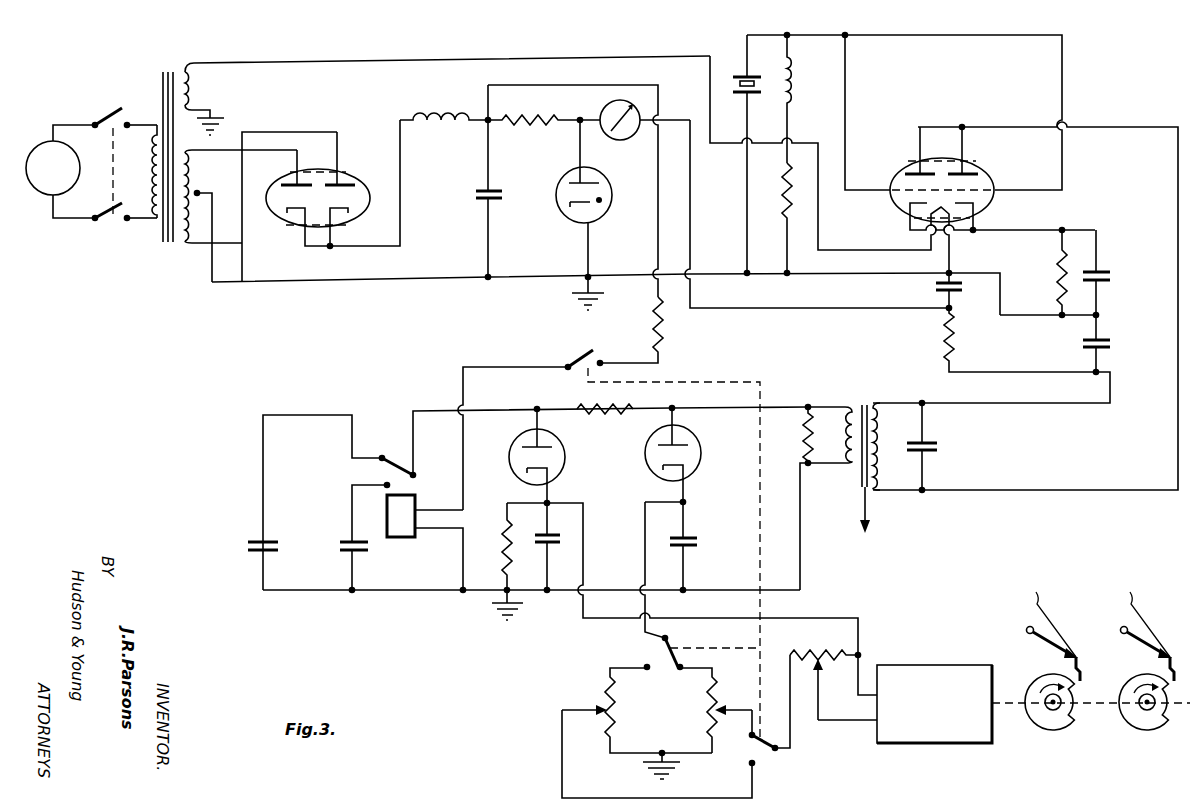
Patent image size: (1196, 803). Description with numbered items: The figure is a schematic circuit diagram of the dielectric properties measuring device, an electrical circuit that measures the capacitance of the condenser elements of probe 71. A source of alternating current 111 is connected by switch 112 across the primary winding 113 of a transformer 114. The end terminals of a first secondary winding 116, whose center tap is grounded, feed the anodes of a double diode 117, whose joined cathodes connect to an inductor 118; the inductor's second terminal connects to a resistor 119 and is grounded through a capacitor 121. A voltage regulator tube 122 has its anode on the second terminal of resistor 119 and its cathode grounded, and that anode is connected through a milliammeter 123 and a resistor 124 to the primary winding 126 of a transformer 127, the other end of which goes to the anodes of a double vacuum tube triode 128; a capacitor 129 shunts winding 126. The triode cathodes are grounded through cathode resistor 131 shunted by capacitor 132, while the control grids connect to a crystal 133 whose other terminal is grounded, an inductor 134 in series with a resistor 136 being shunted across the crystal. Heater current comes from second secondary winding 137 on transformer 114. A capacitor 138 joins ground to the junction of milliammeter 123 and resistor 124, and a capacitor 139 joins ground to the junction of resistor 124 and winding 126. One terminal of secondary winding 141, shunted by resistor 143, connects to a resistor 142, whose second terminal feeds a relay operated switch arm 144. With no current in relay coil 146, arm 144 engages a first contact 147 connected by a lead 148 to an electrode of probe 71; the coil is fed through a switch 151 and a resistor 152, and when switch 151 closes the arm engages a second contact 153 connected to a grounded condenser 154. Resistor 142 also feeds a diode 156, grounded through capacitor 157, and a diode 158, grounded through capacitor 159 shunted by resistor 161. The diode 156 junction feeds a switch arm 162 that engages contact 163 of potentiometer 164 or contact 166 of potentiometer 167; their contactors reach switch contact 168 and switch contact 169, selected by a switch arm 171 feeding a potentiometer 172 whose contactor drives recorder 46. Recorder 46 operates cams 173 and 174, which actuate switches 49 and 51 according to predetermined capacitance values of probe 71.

The recorder 46 is at (926, 664).
The switch 49 is at (1057, 620).
The switch 51 is at (1152, 612).
The probe 71 is at (243, 562).
The source of alternating current 111 is at (45, 200).
The switch 112 is at (103, 112).
The primary winding 113 is at (136, 223).
The transformer 114 is at (166, 252).
The first secondary winding 116 is at (194, 168).
The double diode 117 is at (348, 176).
The inductor 118 is at (422, 130).
The resistor 119 is at (513, 130).
The capacitor 121 is at (480, 200).
The voltage regulator tube 122 is at (564, 222).
The milliammeter 123 is at (610, 141).
The resistor 124 is at (962, 340).
The primary winding 126 is at (888, 490).
The transformer 127 is at (867, 395).
The double vacuum tube triode 128 is at (996, 212).
The capacitor 129 is at (940, 454).
The cathode resistor 131 is at (1058, 272).
The capacitor 132 is at (1108, 284).
The crystal 133 is at (760, 100).
The inductor 134 is at (796, 92).
The resistor 136 is at (782, 212).
The second secondary winding 137 is at (199, 85).
The capacitor 138 is at (934, 288).
The capacitor 139 is at (1106, 350).
The secondary winding 141 is at (844, 470).
The resistor 142 is at (610, 418).
The resistor 143 is at (804, 440).
The relay operated switch arm 144 is at (413, 478).
The relay coil 146 is at (395, 540).
The first contact 147 is at (388, 455).
The lead 148 is at (316, 415).
The switch 151 is at (572, 358).
The resistor 152 is at (668, 339).
The second contact 153 is at (384, 484).
The condenser 154 is at (344, 552).
The diode 156 is at (701, 470).
The capacitor 157 is at (692, 546).
The diode 158 is at (566, 471).
The capacitor 159 is at (552, 546).
The resistor 161 is at (500, 544).
The switch arm 162 is at (664, 645).
The contact 163 is at (680, 671).
The potentiometer 164 is at (706, 726).
The contact 166 is at (648, 672).
The potentiometer 167 is at (603, 678).
The switch contact 168 is at (756, 732).
The switch contact 169 is at (754, 770).
The switch arm 171 is at (777, 755).
The potentiometer 172 is at (832, 638).
The cam 173 is at (1044, 738).
The cam 174 is at (1136, 738).